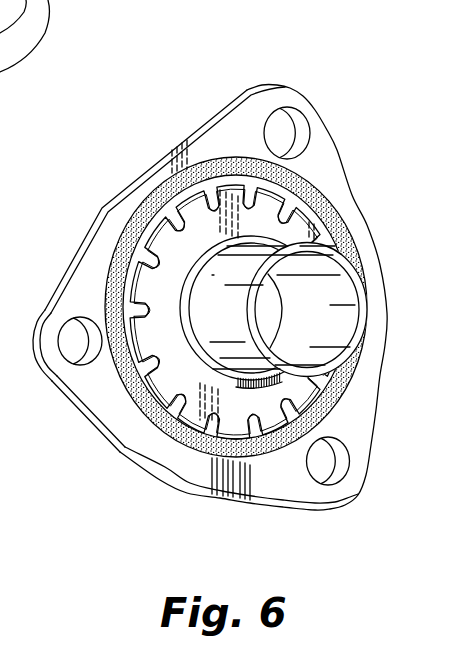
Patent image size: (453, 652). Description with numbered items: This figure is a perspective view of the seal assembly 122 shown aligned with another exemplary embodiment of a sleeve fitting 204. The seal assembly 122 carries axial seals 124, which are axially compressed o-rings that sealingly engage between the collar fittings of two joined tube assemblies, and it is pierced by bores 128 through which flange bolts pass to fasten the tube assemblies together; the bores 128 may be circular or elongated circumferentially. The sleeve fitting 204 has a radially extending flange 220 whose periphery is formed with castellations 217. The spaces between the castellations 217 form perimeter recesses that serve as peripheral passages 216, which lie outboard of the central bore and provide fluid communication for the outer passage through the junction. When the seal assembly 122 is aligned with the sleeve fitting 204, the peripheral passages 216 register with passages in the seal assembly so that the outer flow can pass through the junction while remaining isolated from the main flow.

The seal assembly 122 is at (320, 94).
The axial seals 124 is at (135, 210).
The peripheral passage 216 is at (250, 182).
The castellations 217 is at (272, 197).
The sleeve fitting 204 is at (188, 359).
The radially extending flange 220 is at (263, 392).
The bores 128 is at (2, 68).